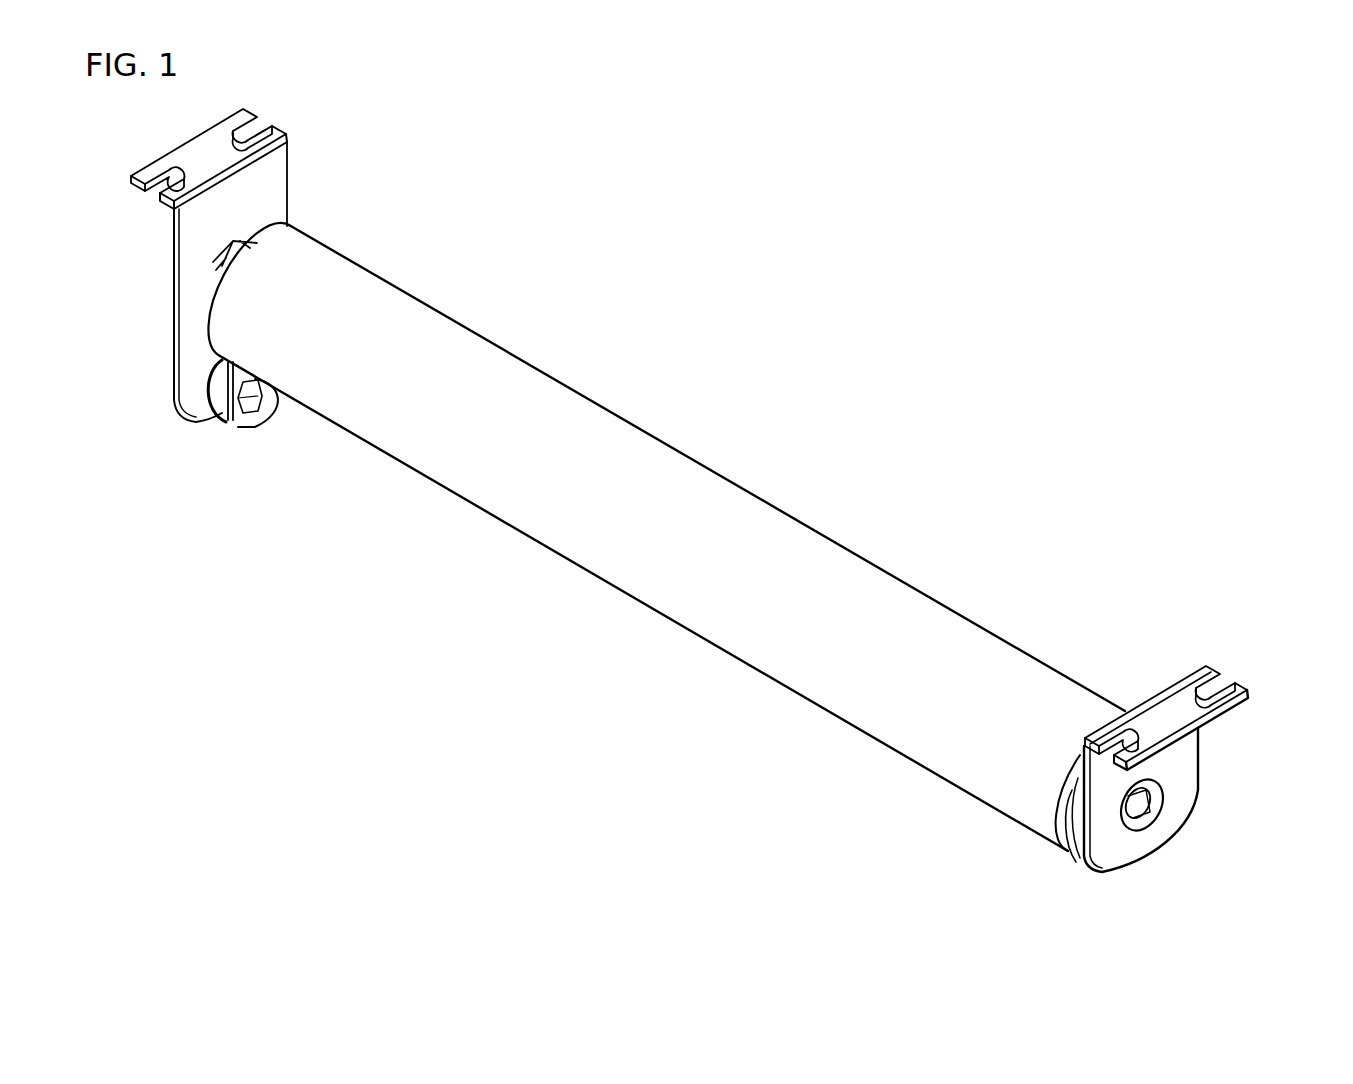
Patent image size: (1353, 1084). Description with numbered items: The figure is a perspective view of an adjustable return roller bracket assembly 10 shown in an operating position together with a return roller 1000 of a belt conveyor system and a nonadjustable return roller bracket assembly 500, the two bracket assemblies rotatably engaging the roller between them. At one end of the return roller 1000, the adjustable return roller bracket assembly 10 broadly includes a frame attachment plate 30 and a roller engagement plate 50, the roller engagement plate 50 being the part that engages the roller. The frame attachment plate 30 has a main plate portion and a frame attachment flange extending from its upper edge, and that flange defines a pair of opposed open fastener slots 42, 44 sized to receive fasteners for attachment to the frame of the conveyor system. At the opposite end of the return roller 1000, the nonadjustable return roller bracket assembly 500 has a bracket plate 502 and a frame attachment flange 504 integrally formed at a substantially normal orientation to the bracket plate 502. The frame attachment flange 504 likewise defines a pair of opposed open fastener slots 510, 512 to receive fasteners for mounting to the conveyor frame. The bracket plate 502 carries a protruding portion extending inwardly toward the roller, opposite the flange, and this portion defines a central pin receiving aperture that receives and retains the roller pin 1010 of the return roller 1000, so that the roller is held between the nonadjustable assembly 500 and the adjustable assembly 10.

The adjustable return roller bracket assembly 10 is at (128, 371).
The frame attachment plate 30 is at (218, 130).
The open fastener slot 42 is at (158, 185).
The open fastener slot 44 is at (253, 127).
The roller engagement plate 50 is at (243, 417).
The return roller 1000 is at (651, 628).
The nonadjustable return roller bracket assembly 500 is at (1219, 678).
The bracket plate 502 is at (1180, 770).
The frame attachment flange 504 is at (1118, 758).
The open fastener slot 510 is at (1078, 866).
The open fastener slot 512 is at (1232, 686).
The roller pin 1010 is at (1150, 823).